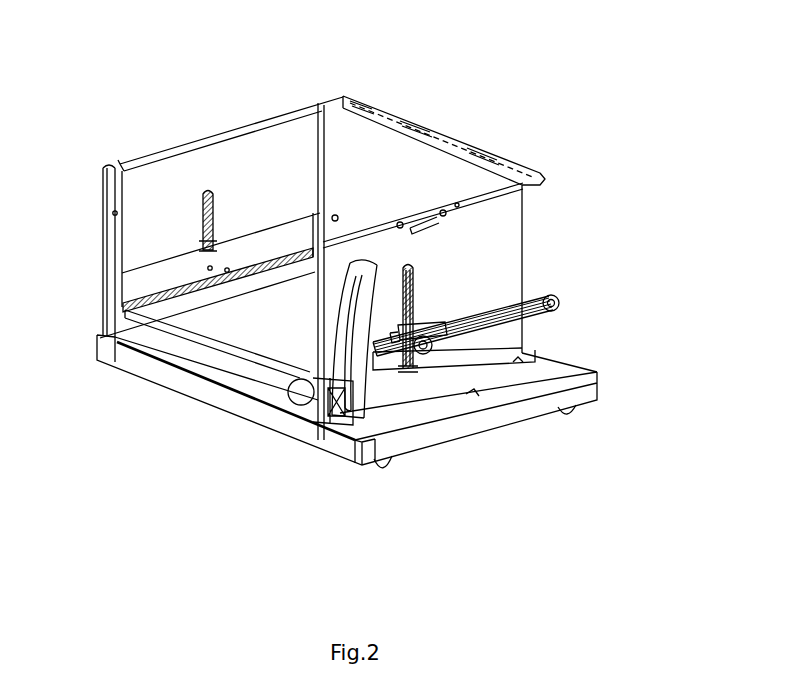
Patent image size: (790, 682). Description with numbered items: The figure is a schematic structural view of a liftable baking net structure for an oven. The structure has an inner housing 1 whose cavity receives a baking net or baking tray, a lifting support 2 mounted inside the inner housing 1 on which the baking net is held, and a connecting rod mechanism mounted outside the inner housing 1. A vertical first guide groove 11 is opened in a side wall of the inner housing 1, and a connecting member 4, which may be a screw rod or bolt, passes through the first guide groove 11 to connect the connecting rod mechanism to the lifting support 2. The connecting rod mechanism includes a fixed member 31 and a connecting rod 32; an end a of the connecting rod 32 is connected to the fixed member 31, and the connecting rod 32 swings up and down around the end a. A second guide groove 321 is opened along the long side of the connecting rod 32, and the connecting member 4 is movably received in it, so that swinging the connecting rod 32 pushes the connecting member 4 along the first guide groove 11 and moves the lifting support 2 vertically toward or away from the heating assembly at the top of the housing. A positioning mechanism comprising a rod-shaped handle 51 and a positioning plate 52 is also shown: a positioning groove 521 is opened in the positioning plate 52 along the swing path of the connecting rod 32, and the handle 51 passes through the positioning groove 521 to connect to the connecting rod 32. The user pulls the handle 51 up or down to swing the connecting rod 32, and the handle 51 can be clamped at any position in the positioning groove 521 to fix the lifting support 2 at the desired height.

The inner housing 1 is at (480, 260).
The lifting support 2 is at (233, 347).
The connecting member 4 is at (412, 323).
The first guide groove 11 is at (395, 266).
The fixed member 31 is at (557, 303).
The connecting rod 32 is at (522, 375).
The second guide groove 321 is at (473, 395).
The handle 51 is at (398, 385).
The positioning plate 52 is at (337, 400).
The positioning groove 521 is at (356, 450).
The end a is at (558, 300).